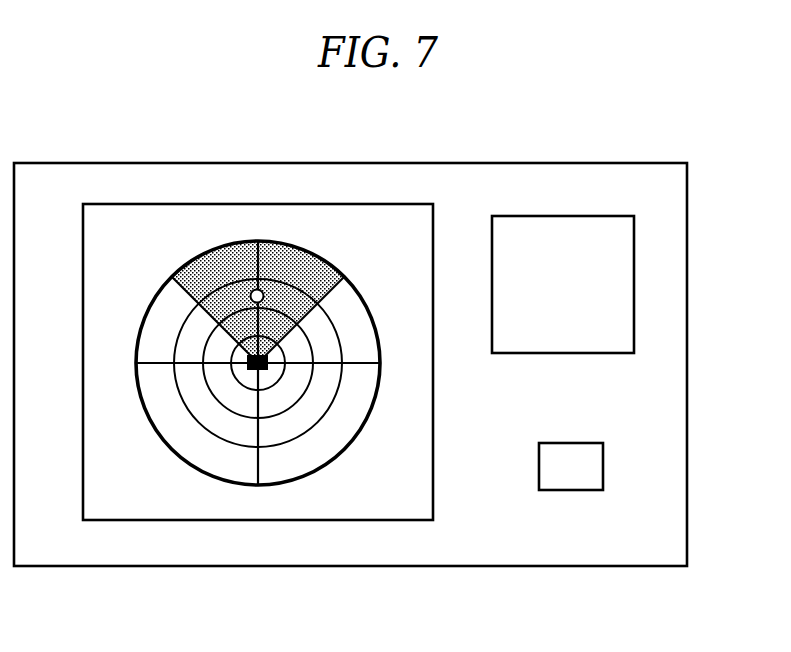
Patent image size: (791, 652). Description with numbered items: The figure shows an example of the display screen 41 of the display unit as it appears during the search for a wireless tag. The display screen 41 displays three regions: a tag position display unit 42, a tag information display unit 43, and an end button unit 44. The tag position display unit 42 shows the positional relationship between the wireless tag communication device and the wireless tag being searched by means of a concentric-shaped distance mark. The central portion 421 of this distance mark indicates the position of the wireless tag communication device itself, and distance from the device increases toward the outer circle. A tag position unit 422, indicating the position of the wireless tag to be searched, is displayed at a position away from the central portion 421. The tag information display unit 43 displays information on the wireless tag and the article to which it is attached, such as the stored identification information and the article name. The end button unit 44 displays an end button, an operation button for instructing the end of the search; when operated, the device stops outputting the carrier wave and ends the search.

The display screen 41 is at (572, 163).
The tag position display unit 42 is at (252, 370).
The central portion 421 is at (244, 357).
The tag position unit 422 is at (250, 297).
The tag information display unit 43 is at (634, 263).
The end button unit 44 is at (603, 471).